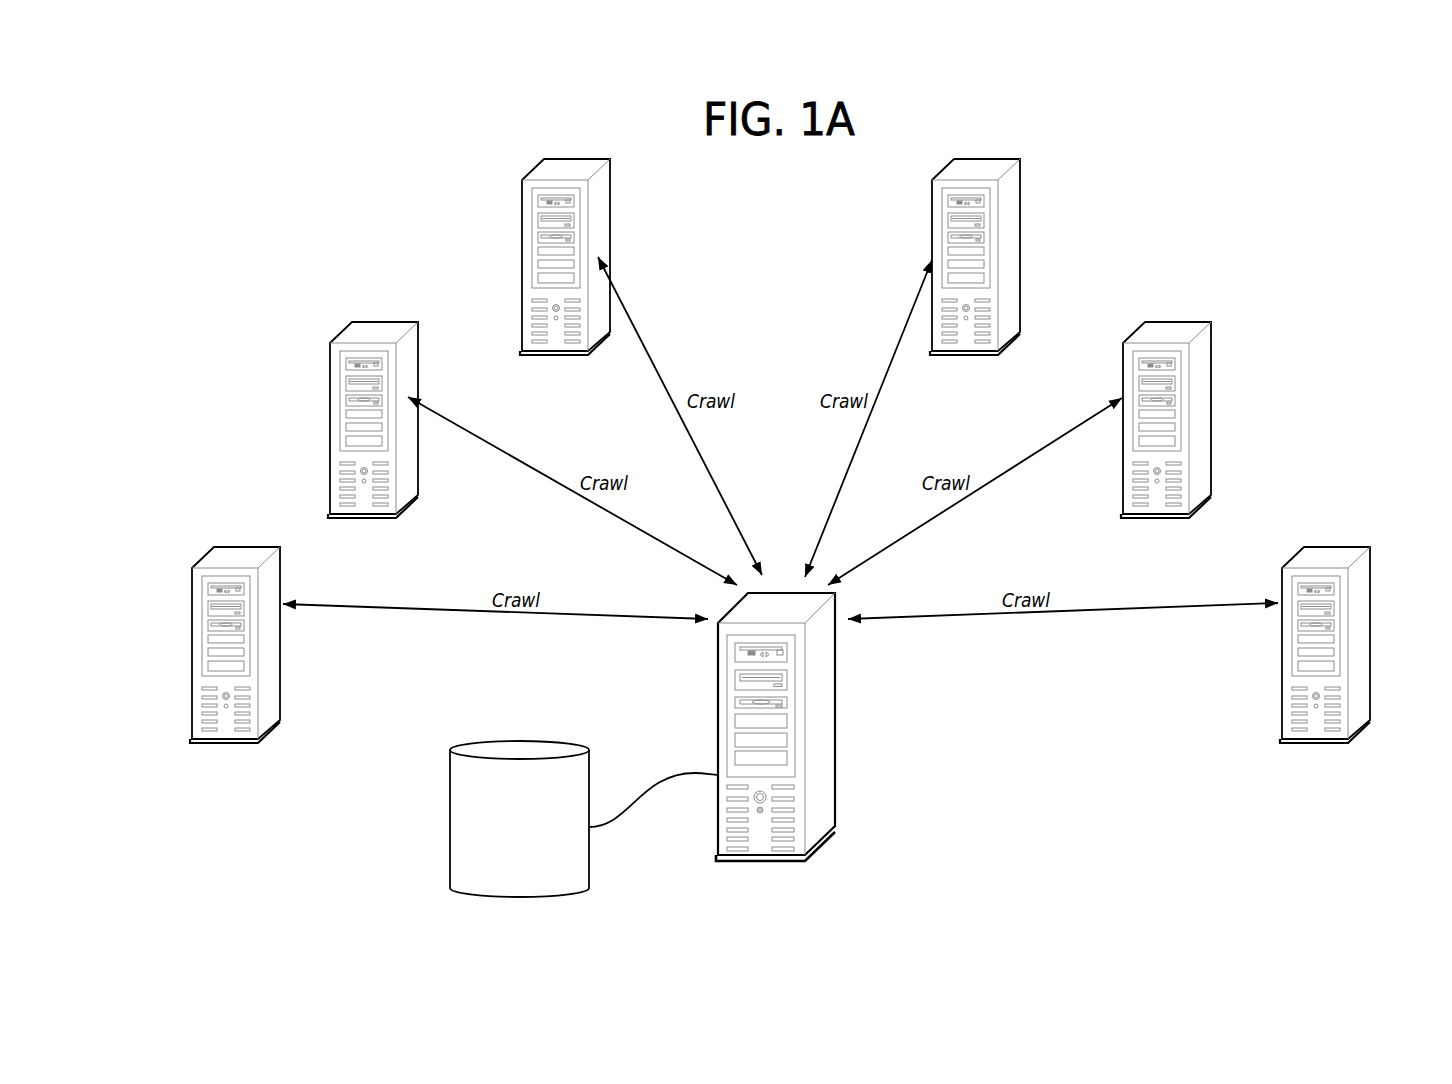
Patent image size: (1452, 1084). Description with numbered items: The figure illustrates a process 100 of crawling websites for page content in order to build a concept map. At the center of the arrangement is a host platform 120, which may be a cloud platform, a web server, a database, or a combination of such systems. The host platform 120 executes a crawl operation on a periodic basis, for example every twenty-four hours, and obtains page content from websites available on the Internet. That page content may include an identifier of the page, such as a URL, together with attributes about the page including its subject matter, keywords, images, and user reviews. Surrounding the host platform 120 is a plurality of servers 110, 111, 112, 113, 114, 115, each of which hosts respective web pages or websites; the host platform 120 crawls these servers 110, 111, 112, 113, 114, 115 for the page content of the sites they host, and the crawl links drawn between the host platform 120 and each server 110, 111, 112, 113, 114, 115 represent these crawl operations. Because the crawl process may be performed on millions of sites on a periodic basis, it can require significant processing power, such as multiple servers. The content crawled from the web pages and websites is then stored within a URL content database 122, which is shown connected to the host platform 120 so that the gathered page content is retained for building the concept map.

The process 100 is at (1420, 127).
The server 110 is at (192, 602).
The server 111 is at (330, 377).
The server 112 is at (522, 222).
The server 113 is at (1020, 222).
The server 114 is at (1211, 377).
The server 115 is at (1364, 602).
The host platform 120 is at (822, 698).
The URL content database 122 is at (450, 792).